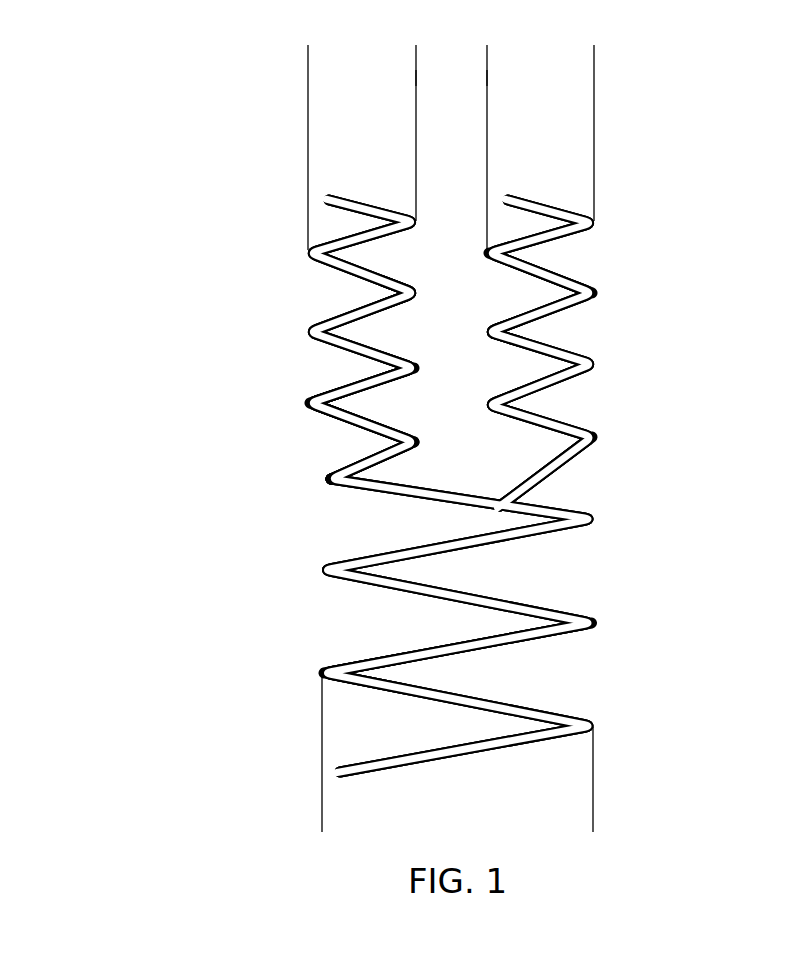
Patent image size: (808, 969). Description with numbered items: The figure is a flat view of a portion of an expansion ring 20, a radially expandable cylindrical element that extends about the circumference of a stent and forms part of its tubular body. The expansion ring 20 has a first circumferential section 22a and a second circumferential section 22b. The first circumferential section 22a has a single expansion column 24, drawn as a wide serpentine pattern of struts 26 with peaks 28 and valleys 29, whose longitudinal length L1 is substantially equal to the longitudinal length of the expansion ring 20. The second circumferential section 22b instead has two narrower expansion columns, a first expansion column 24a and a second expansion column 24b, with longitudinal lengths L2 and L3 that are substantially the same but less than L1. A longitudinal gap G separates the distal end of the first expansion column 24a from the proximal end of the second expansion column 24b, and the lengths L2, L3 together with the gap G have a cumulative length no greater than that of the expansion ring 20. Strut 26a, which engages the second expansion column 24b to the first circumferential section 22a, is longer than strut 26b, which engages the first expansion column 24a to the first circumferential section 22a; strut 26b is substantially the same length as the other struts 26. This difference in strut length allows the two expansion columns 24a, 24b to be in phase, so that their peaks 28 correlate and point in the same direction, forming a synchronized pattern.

The expansion ring 20 is at (237, 208).
The first circumferential section 22a is at (665, 510).
The second circumferential section 22b is at (665, 198).
The expansion column 24 is at (478, 762).
The first expansion column 24a is at (357, 190).
The second expansion column 24b is at (538, 190).
The strut 26 is at (565, 277).
The strut 26a is at (562, 477).
The strut 26b is at (385, 467).
The peak 28 is at (417, 295).
The valley 29 is at (400, 297).
The longitudinal length L1 is at (581, 832).
The longitudinal length L2 is at (404, 45).
The longitudinal length L3 is at (582, 45).
The longitudinal gap G is at (475, 78).